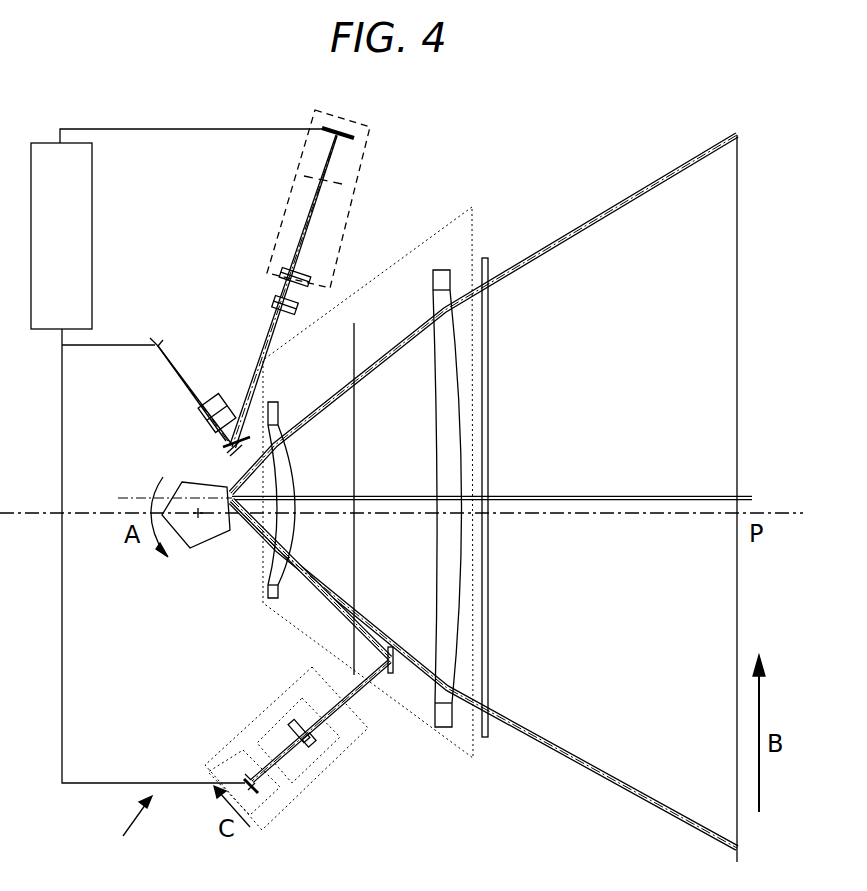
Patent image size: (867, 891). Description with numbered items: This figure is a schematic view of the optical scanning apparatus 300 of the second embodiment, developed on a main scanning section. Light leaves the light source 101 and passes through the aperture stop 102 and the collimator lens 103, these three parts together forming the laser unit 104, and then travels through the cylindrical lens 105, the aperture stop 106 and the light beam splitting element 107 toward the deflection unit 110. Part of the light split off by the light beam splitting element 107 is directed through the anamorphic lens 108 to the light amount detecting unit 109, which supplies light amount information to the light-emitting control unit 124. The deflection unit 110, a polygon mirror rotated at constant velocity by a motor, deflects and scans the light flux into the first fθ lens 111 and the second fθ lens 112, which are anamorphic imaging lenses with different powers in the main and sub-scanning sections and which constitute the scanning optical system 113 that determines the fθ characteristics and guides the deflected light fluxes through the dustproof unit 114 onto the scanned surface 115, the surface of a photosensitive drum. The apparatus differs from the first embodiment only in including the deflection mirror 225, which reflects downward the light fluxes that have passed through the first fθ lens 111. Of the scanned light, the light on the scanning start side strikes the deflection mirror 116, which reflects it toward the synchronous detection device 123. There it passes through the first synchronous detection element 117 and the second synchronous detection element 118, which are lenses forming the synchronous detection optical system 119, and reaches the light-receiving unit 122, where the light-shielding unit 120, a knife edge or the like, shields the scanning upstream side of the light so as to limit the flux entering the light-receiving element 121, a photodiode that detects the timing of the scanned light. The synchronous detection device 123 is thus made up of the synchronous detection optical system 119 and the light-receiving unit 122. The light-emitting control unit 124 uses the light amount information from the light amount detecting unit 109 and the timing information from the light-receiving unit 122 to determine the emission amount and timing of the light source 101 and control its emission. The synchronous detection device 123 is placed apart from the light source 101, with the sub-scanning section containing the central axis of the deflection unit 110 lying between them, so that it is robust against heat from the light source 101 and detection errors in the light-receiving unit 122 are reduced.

The light source 101 is at (356, 137).
The aperture stop 102 is at (343, 183).
The collimator lens 103 is at (281, 276).
The laser unit 104 is at (298, 158).
The cylindrical lens 105 is at (273, 304).
The aperture stop 106 is at (222, 446).
The light beam splitting element 107 is at (228, 456).
The anamorphic lens 108 is at (217, 396).
The light amount detecting unit 109 is at (160, 340).
The deflection unit 110 is at (194, 547).
The first fθ lens 111 is at (280, 422).
The second fθ lens 112 is at (437, 270).
The scanning optical system 113 is at (366, 283).
The dustproof unit 114 is at (486, 258).
The scanned surface 115 is at (740, 165).
The deflection mirror 116 is at (391, 675).
The first synchronous detection element 117 is at (312, 738).
The second synchronous detection element 118 is at (303, 746).
The synchronous detection optical system 119 is at (282, 718).
The light-shielding unit 120 is at (260, 793).
The light-receiving element 121 is at (250, 776).
The light-receiving unit 122 is at (228, 763).
The synchronous detection device 123 is at (296, 681).
The light-emitting control unit 124 is at (42, 143).
The deflection mirror 225 is at (357, 429).
The optical scanning apparatus 300 is at (114, 823).